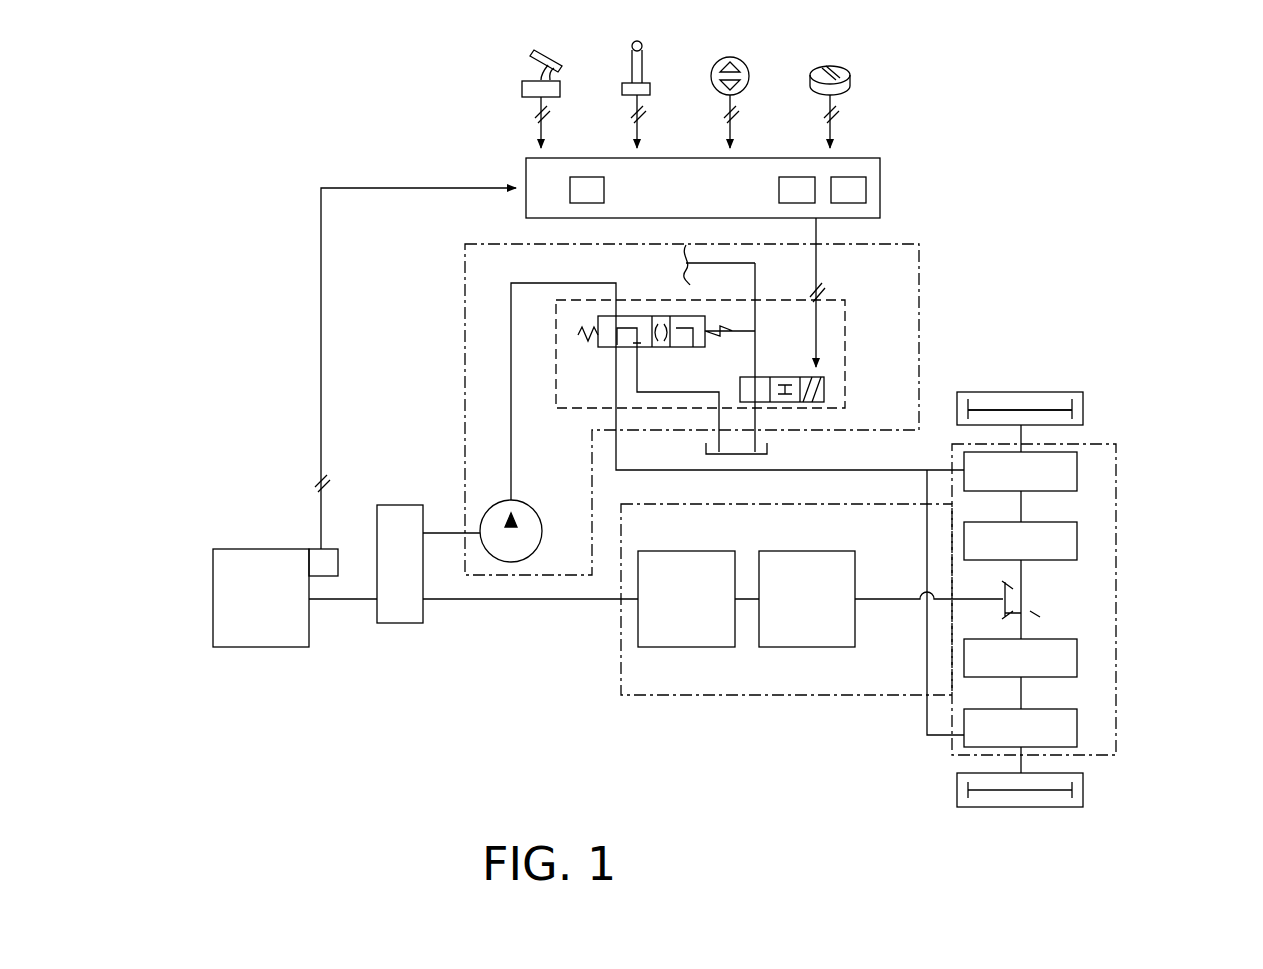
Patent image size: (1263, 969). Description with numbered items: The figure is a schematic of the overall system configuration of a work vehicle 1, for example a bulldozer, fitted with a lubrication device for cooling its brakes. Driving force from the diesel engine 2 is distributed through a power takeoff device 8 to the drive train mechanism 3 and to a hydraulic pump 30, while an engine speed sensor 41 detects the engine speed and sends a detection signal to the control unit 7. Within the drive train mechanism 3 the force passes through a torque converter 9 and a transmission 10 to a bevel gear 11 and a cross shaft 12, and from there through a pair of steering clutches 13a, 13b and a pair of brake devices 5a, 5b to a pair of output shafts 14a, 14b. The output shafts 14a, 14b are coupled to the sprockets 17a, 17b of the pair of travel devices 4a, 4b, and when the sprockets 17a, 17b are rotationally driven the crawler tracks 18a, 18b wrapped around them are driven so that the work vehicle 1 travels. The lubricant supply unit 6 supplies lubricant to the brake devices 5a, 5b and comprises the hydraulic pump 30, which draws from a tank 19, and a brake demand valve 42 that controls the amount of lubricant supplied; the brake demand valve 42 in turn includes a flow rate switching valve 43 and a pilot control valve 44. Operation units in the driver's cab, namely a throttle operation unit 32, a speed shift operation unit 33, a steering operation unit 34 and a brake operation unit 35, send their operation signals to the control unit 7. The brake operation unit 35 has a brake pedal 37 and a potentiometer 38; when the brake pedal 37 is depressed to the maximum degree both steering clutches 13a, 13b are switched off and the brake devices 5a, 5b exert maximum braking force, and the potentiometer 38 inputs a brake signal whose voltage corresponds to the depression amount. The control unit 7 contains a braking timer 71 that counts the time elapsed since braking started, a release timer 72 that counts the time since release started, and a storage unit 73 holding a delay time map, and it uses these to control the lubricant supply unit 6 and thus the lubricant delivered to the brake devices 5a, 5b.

The work vehicle 1 is at (308, 106).
The engine 2 is at (236, 548).
The drive train mechanism 3 is at (1116, 548).
The travel device 4a is at (956, 790).
The travel device 4b is at (1083, 408).
The brake device 5a is at (963, 743).
The brake device 5b is at (1077, 470).
The lubricant supply unit 6 is at (919, 278).
The control unit 7 is at (880, 190).
The power takeoff device 8 is at (408, 504).
The torque converter 9 is at (690, 551).
The transmission 10 is at (828, 551).
The bevel gear 11 is at (982, 616).
The cross shaft 12 is at (1022, 575).
The steering clutch 13a is at (1077, 658).
The steering clutch 13b is at (1077, 540).
The output shaft 14a is at (1022, 765).
The output shaft 14b is at (1022, 432).
The sprocket 17a is at (1050, 789).
The sprocket 17b is at (1055, 409).
The crawler track 18a is at (1083, 790).
The crawler track 18b is at (997, 391).
The hydraulic oil tank 19 is at (767, 450).
The hydraulic pump 30 is at (537, 512).
The throttle operation unit 32 is at (851, 82).
The speed shift operation unit 33 is at (748, 80).
The steering operation unit 34 is at (651, 90).
The brake operation unit 35 is at (440, 76).
The brake pedal 37 is at (534, 60).
The potentiometer 38 is at (521, 90).
The engine speed sensor 41 is at (330, 548).
The brake demand valve 42 is at (845, 355).
The flow rate switching valve 43 is at (641, 315).
The pilot control valve 44 is at (783, 376).
The braking timer 71 is at (860, 176).
The release timer 72 is at (800, 176).
The storage unit 73 is at (588, 176).